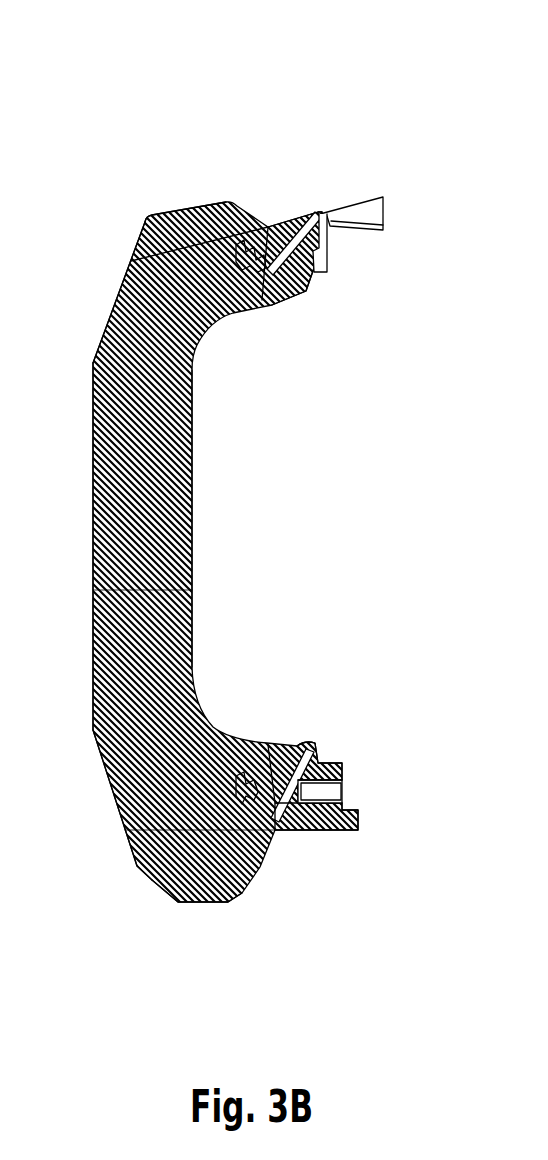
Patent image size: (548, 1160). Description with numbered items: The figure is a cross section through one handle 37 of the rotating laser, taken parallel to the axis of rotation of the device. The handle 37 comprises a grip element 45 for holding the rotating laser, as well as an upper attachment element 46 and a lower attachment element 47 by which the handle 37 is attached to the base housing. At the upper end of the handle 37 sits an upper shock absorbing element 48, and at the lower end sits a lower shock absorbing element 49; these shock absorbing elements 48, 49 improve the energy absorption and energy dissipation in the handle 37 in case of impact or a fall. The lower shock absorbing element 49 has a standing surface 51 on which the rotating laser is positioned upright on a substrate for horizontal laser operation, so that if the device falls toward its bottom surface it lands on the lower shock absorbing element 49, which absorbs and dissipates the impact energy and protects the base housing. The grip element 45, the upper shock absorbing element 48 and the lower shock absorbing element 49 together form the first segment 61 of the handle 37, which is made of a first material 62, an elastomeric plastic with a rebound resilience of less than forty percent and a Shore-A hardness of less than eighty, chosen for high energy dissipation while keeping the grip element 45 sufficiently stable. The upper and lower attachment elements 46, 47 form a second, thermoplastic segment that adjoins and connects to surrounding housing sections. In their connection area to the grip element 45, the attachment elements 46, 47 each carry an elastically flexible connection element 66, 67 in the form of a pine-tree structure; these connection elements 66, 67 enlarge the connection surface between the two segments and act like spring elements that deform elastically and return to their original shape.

The handle 37 is at (188, 106).
The grip element 45 is at (192, 507).
The upper attachment element 46 is at (372, 206).
The lower attachment element 47 is at (325, 760).
The upper shock absorbing element 48 is at (162, 214).
The lower shock absorbing element 49 is at (154, 898).
The standing surface 51 is at (205, 903).
The first segment 61 is at (102, 322).
The first material 62 is at (113, 531).
The elastically flexible connection element 66 is at (263, 268).
The elastically flexible connection element 67 is at (262, 741).